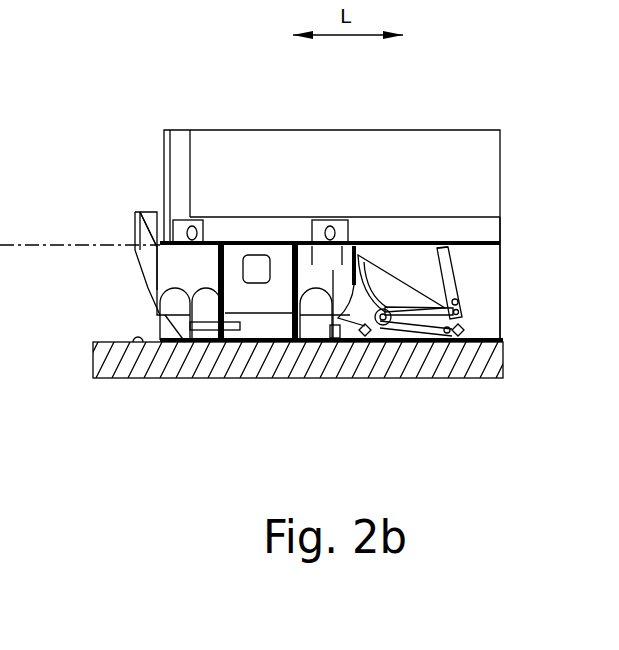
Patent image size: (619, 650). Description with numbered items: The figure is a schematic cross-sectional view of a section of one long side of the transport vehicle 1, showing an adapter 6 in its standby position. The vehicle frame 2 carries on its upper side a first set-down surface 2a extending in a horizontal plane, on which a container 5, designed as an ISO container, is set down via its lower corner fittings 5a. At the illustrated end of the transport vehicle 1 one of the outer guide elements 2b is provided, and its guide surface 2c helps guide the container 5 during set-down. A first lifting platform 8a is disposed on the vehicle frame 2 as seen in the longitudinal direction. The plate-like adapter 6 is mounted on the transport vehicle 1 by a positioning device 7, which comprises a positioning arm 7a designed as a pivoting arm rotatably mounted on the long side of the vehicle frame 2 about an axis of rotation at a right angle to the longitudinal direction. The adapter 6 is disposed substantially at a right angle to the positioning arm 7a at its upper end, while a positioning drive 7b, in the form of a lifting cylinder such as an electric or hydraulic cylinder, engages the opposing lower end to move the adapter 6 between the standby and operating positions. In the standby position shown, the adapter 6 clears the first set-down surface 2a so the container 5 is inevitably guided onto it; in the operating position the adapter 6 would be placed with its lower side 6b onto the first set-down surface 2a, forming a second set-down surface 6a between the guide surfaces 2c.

The transport vehicle 1 is at (85, 368).
The vehicle frame 2 is at (140, 355).
The first set-down surface 2a is at (217, 238).
The outer guide element 2b is at (148, 214).
The guide surface 2c is at (89, 234).
The container 5 is at (438, 157).
The corner fitting 5a is at (188, 219).
The adapter 6 is at (457, 294).
The second set-down surface 6a is at (456, 277).
The lower side of adapter 6b is at (422, 260).
The positioning device 7 is at (400, 327).
The positioning arm 7a is at (385, 326).
The positioning drive 7b is at (445, 333).
The first lifting platform 8a is at (485, 285).